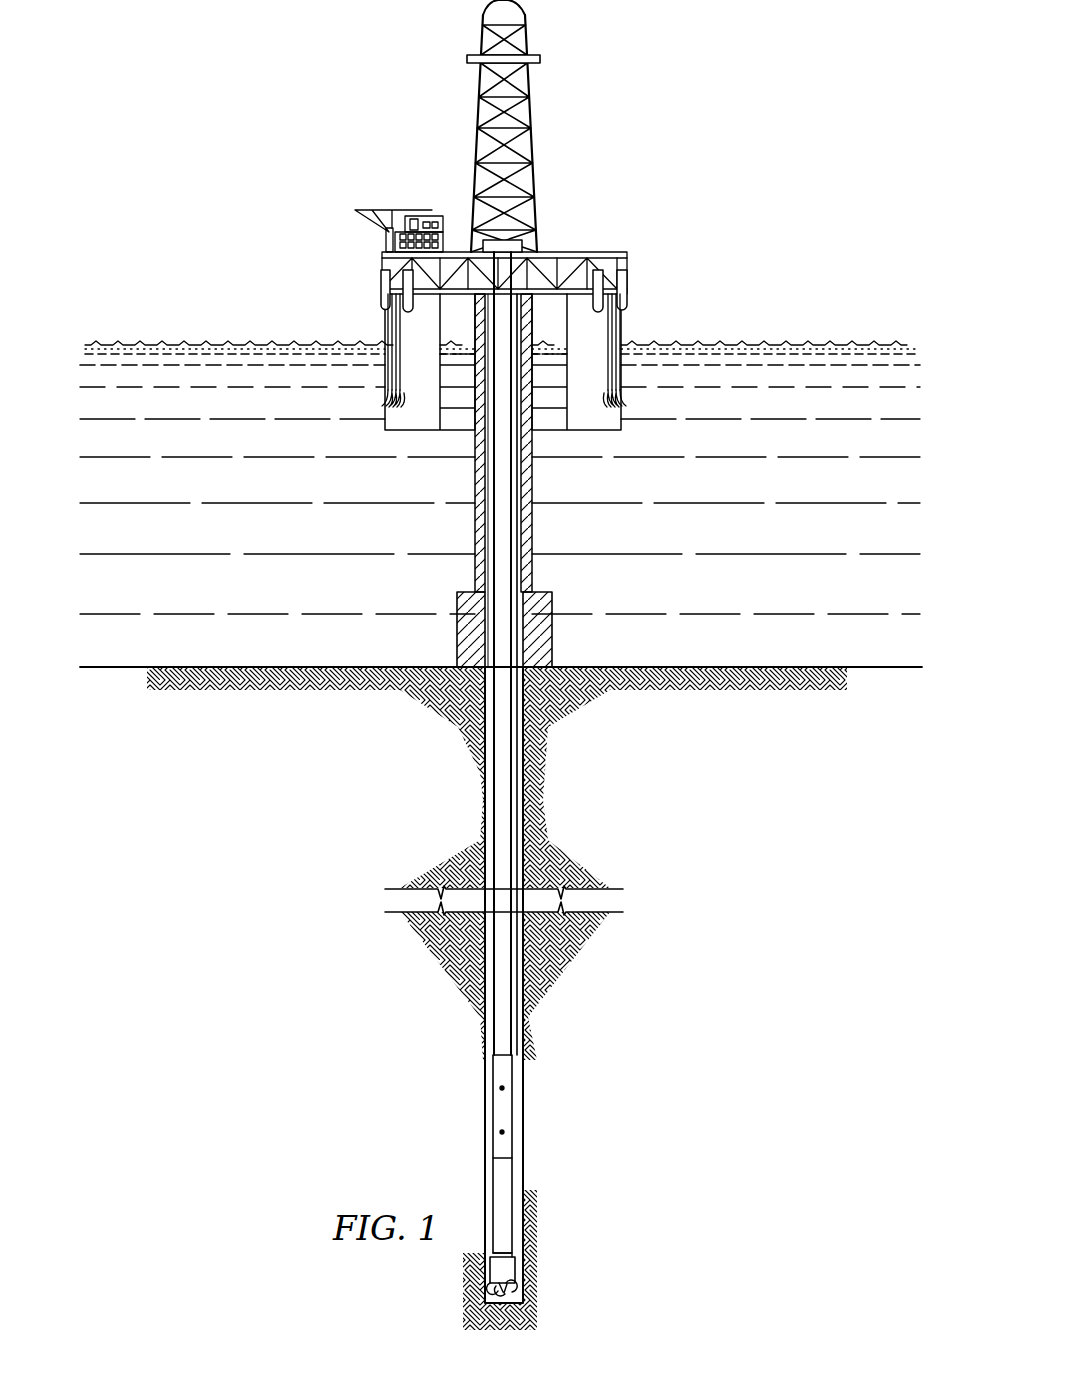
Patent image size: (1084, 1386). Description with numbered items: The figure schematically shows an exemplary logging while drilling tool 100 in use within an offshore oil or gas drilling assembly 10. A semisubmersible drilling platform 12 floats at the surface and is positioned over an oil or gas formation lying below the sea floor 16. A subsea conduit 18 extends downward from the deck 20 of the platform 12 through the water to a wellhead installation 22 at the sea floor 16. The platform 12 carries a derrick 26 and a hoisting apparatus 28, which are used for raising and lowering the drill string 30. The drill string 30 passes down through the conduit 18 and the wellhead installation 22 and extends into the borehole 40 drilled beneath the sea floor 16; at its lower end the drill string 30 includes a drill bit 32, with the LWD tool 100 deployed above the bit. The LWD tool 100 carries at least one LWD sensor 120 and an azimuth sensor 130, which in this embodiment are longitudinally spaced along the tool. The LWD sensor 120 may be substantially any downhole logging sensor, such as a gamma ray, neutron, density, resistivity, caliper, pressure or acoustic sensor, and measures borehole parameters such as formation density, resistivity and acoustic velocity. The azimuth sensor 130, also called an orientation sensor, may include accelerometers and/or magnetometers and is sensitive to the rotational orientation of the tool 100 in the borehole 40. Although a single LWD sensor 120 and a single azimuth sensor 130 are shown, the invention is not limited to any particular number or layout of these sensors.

The offshore oil or gas drilling assembly 10 is at (605, 137).
The semisubmersible drilling platform 12 is at (612, 253).
The sea floor 16 is at (783, 667).
The subsea conduit 18 is at (533, 527).
The deck 20 is at (623, 287).
The wellhead installation 22 is at (543, 592).
The derrick 26 is at (507, 235).
The hoisting apparatus 28 is at (528, 43).
The drill string 30 is at (505, 443).
The drill bit 32 is at (525, 1292).
The borehole 40 is at (485, 785).
The logging while drilling tool 100 is at (503, 1105).
The LWD sensor 120 is at (507, 1133).
The azimuth sensor 130 is at (495, 1090).